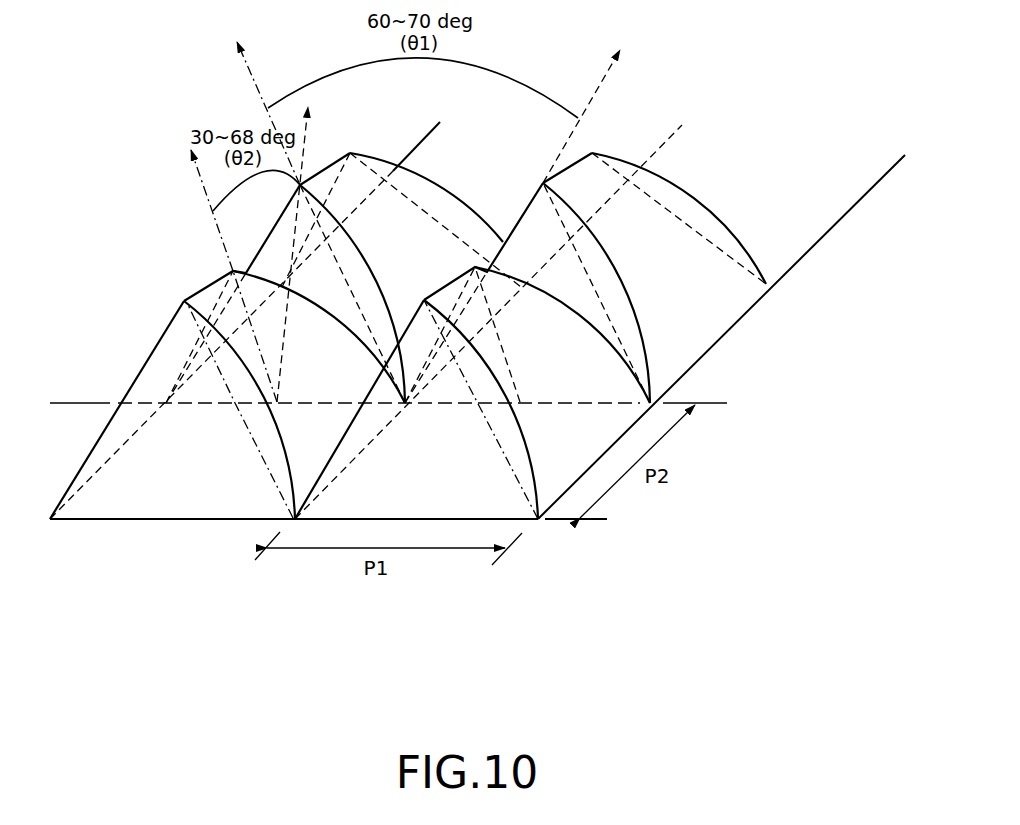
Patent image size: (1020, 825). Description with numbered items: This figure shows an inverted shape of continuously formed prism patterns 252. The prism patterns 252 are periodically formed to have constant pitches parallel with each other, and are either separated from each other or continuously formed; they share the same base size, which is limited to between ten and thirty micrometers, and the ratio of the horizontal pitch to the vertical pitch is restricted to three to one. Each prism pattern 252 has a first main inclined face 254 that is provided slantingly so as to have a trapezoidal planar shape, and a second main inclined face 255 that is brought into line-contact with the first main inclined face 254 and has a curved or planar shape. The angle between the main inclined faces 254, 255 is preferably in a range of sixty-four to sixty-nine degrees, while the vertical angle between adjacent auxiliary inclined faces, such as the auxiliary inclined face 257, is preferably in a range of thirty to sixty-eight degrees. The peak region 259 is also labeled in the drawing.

The prism pattern 252 is at (443, 177).
The first main inclined face 254 is at (274, 227).
The second main inclined face 255 is at (448, 225).
The auxiliary inclined face 257 is at (268, 263).
The apex 259 is at (326, 172).